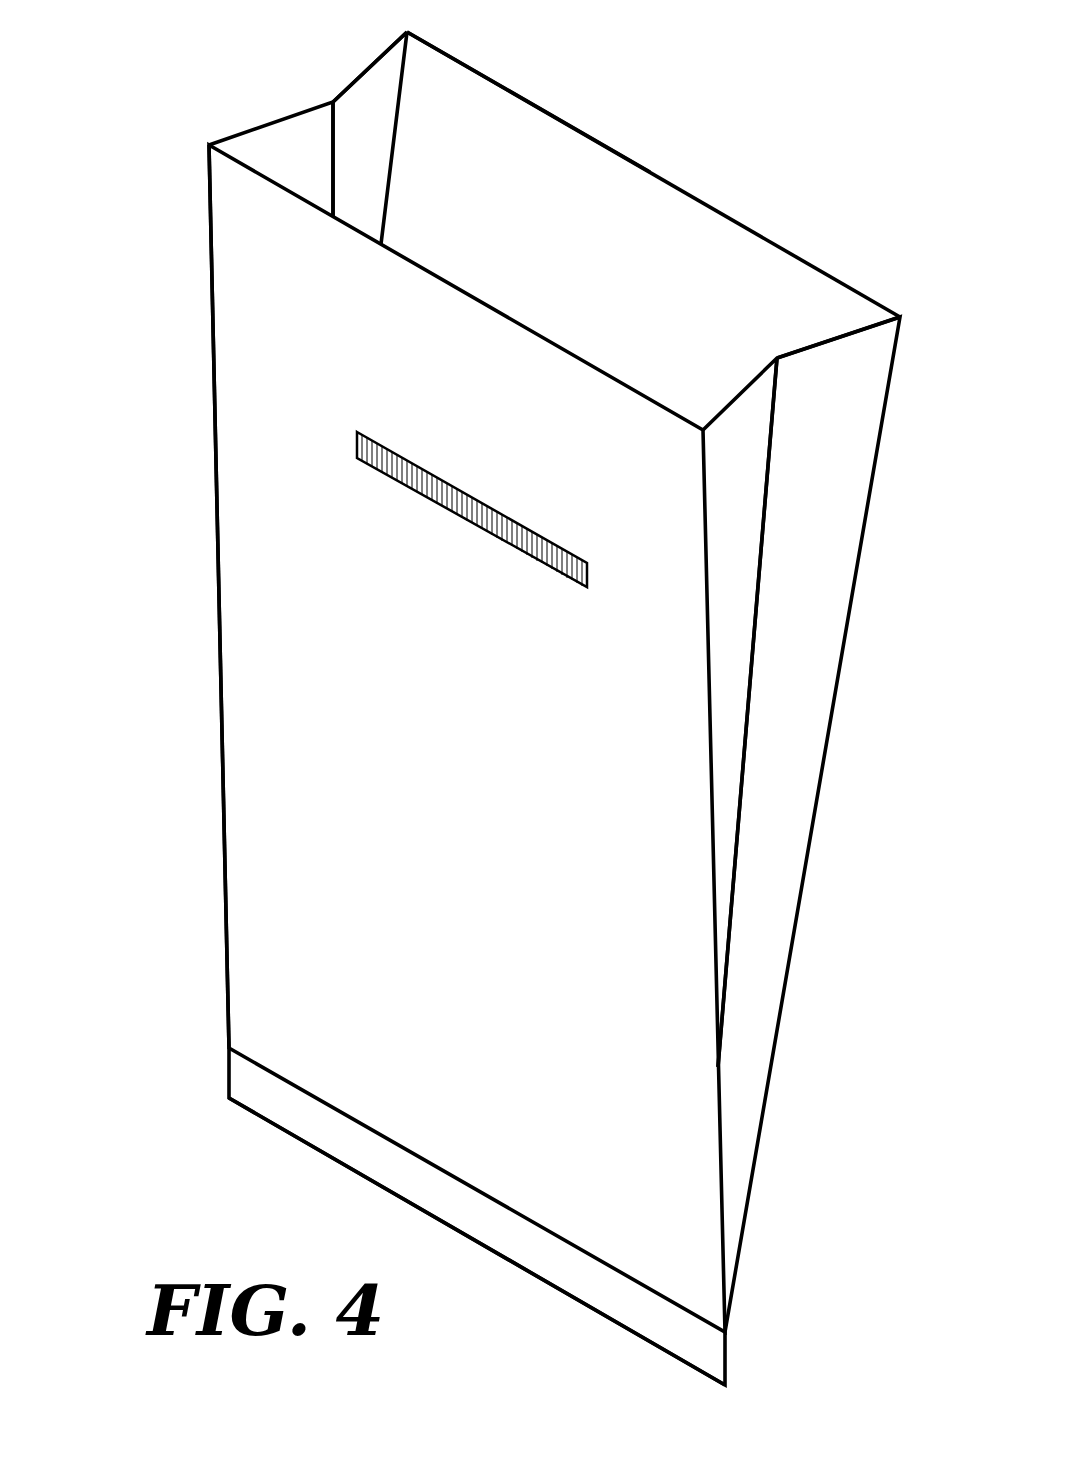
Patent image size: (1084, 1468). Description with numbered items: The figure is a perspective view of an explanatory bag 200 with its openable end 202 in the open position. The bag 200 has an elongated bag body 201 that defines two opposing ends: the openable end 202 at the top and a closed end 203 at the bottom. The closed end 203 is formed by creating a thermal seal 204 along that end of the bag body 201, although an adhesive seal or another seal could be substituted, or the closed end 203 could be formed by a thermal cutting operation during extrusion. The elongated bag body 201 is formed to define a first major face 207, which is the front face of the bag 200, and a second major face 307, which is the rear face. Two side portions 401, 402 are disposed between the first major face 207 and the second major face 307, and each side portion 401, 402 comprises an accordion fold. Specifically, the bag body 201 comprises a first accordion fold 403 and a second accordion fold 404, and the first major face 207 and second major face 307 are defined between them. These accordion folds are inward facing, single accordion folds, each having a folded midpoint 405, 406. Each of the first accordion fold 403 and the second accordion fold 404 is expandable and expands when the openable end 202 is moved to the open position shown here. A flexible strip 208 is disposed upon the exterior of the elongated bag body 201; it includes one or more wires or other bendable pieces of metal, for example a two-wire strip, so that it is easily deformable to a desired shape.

The bag 200 is at (145, 474).
The elongated bag body 201 is at (393, 763).
The openable end 202 is at (732, 200).
The closed end 203 is at (325, 1180).
The thermal seal 204 is at (395, 1141).
The first major face 207 is at (297, 863).
The flexible strip 208 is at (443, 497).
The second major face 307 is at (493, 81).
The side portion 401 is at (830, 463).
The side portion 402 is at (253, 114).
The first accordion fold 403 is at (838, 337).
The second accordion fold 404 is at (352, 82).
The folded midpoint 405 is at (777, 358).
The folded midpoint 406 is at (335, 152).